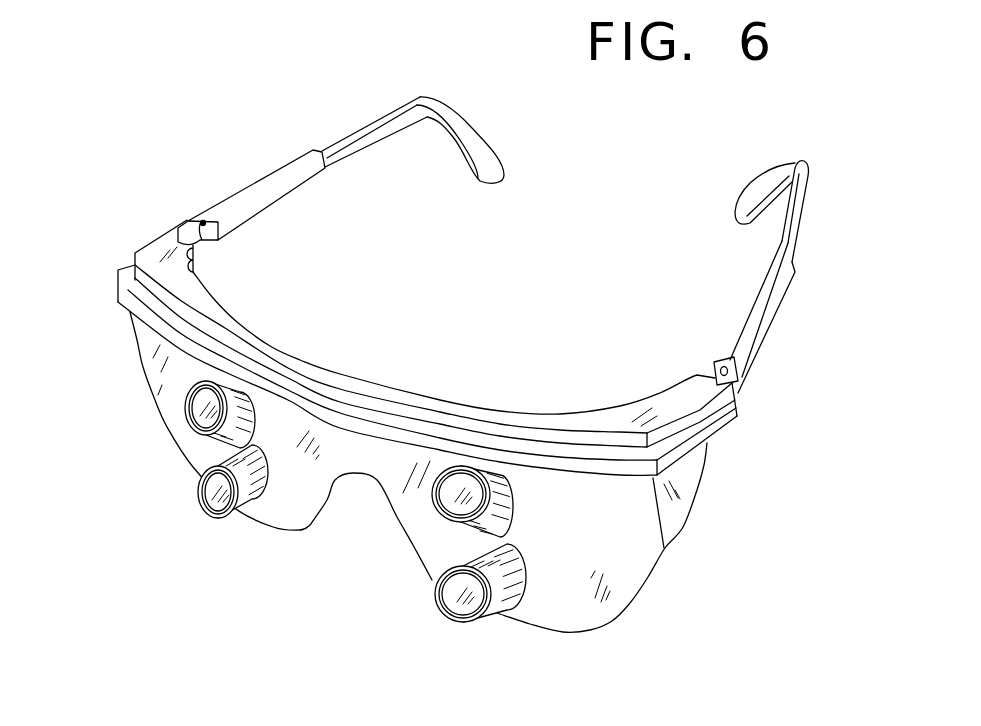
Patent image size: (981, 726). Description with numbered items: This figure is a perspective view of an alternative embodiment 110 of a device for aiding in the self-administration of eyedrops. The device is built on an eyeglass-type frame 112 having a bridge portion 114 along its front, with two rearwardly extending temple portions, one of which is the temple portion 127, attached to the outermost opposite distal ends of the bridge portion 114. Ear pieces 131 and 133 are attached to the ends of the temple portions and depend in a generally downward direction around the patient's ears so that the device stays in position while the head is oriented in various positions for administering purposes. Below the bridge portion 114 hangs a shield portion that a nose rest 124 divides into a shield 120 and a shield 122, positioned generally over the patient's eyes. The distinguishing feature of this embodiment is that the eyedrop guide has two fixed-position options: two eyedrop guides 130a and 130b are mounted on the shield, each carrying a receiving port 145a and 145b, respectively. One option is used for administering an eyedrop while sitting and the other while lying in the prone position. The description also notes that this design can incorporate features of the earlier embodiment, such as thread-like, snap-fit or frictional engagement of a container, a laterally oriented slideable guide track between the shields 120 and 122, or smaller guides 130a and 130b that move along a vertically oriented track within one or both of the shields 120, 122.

The alternative embodiment of the present invention 110 is at (142, 157).
The eyeglass-type frame 112 is at (133, 254).
The bridge portion 114 is at (370, 393).
The shield 120 is at (610, 537).
The shield 122 is at (317, 497).
The nose rest 124 is at (765, 323).
The temple portion 127 is at (284, 192).
The ear piece 131 is at (483, 150).
The ear piece 133 is at (762, 183).
The eyedrop guide 130a is at (455, 535).
The eyedrop guide 130b is at (498, 607).
The receiving port 145a is at (435, 507).
The receiving port 145b is at (452, 617).